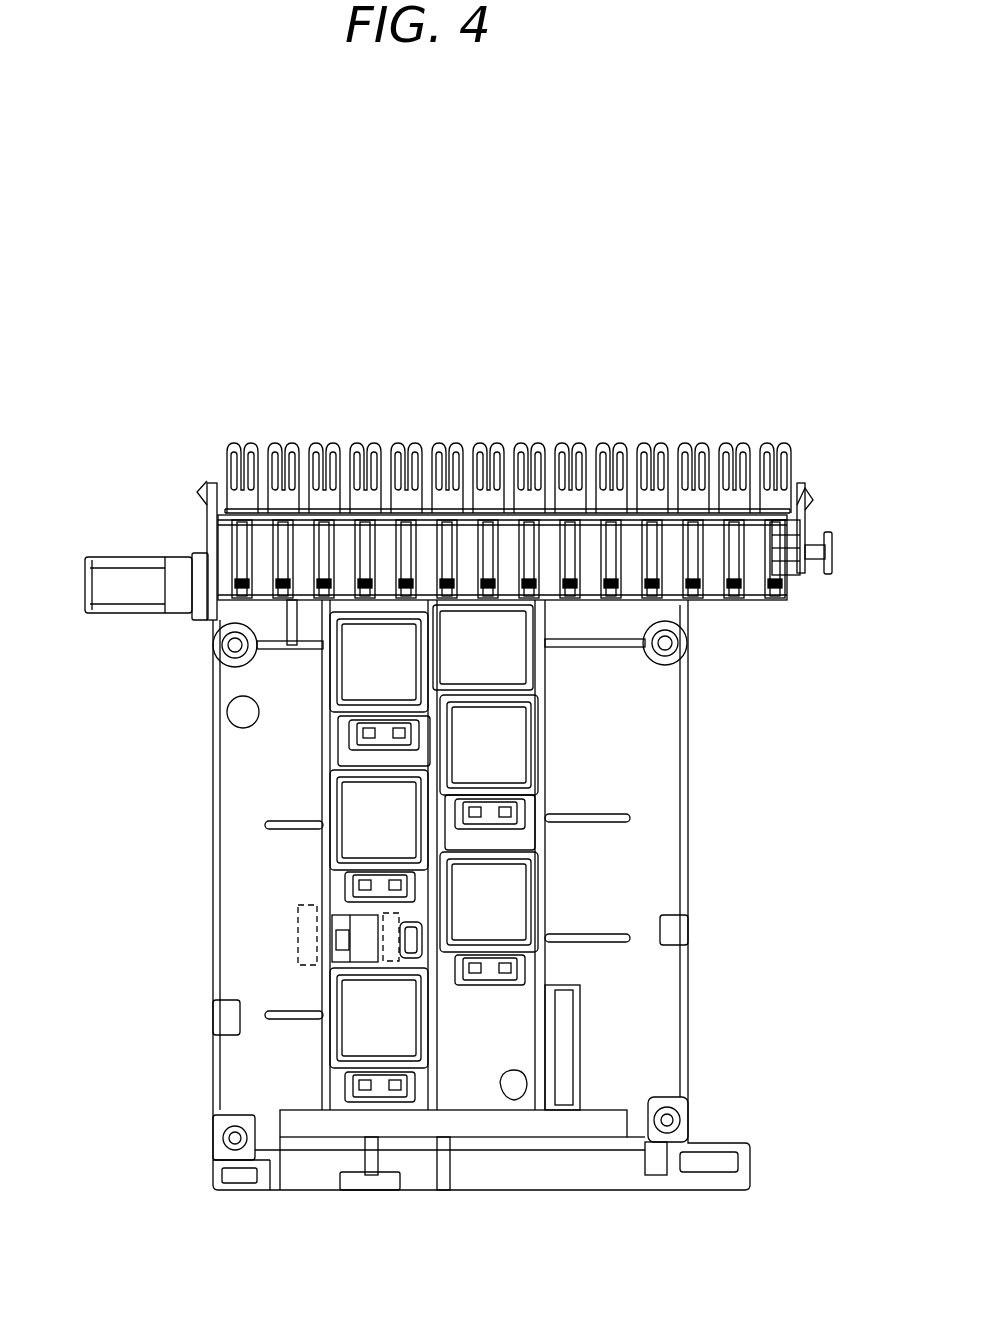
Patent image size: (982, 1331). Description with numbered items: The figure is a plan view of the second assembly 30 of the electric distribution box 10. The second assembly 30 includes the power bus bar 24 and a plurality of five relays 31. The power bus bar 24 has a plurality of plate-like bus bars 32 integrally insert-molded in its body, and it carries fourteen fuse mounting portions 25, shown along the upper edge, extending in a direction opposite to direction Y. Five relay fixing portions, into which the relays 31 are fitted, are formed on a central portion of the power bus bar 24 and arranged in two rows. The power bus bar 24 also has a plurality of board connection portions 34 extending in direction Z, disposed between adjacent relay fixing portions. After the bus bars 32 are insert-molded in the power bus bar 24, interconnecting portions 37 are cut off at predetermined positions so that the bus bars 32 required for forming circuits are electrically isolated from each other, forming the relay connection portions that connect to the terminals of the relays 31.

The electric distribution box 10 is at (666, 380).
The power bus bar 24 is at (665, 891).
The fuse mounting portions 25 is at (572, 442).
The second assembly 30 is at (706, 762).
The relays 31 is at (345, 688).
The bus bars 32 is at (298, 940).
The board connection portions 34 is at (350, 745).
The interconnecting portions 37 is at (350, 922).